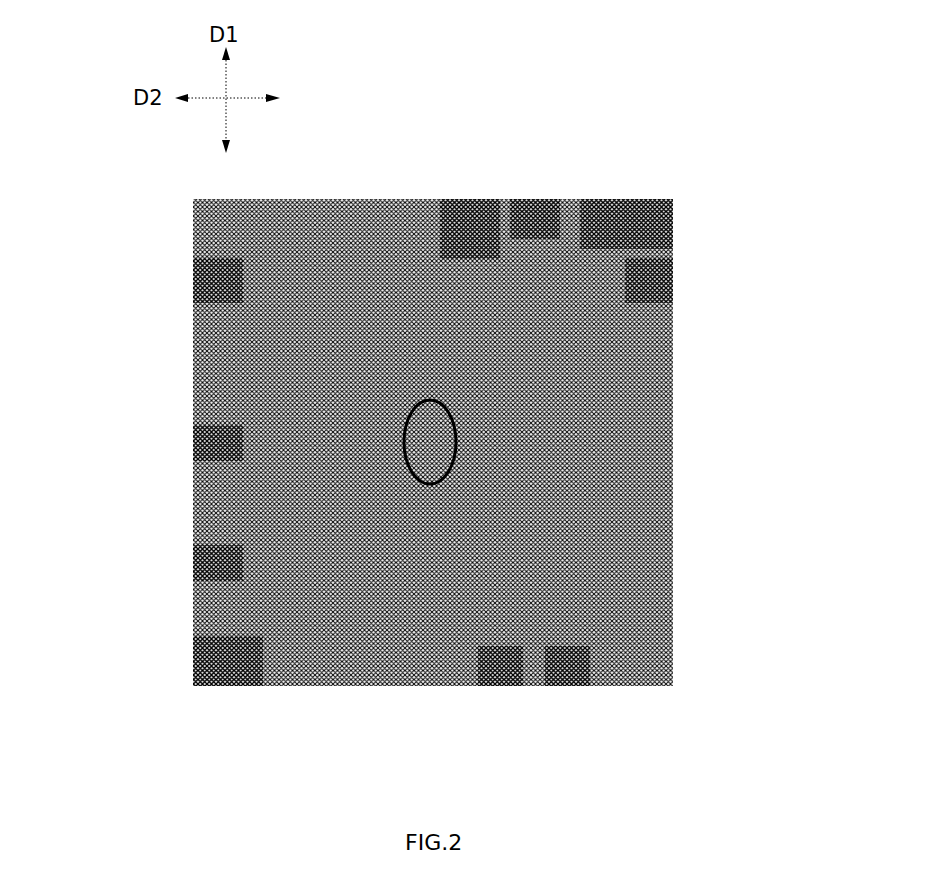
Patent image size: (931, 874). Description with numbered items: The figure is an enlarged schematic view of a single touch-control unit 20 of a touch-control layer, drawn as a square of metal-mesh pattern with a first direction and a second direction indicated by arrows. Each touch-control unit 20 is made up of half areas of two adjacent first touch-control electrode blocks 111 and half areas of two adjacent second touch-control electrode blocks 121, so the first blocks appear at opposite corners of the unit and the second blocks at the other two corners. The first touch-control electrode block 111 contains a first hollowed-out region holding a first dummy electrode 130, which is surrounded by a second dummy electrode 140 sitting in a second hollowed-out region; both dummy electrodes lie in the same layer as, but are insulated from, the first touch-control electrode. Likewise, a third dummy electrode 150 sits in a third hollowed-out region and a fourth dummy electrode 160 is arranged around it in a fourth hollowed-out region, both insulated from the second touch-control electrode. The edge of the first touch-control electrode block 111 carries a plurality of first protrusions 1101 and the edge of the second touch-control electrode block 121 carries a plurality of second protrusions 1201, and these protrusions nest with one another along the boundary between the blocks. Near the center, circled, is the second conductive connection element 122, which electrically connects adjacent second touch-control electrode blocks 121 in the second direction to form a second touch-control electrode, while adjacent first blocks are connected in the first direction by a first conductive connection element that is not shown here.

The touch-control unit 20 is at (432, 117).
The first dummy electrode 130 is at (470, 200).
The second dummy electrode 140 is at (528, 199).
The first touch-control electrode block 111 is at (597, 199).
The second touch-control electrode block 121 is at (191, 283).
The second conductive connection element 122 is at (490, 405).
The third dummy electrode 150 is at (192, 443).
The fourth dummy electrode 160 is at (192, 562).
The first protrusions 1101 is at (500, 686).
The second protrusions 1201 is at (565, 686).